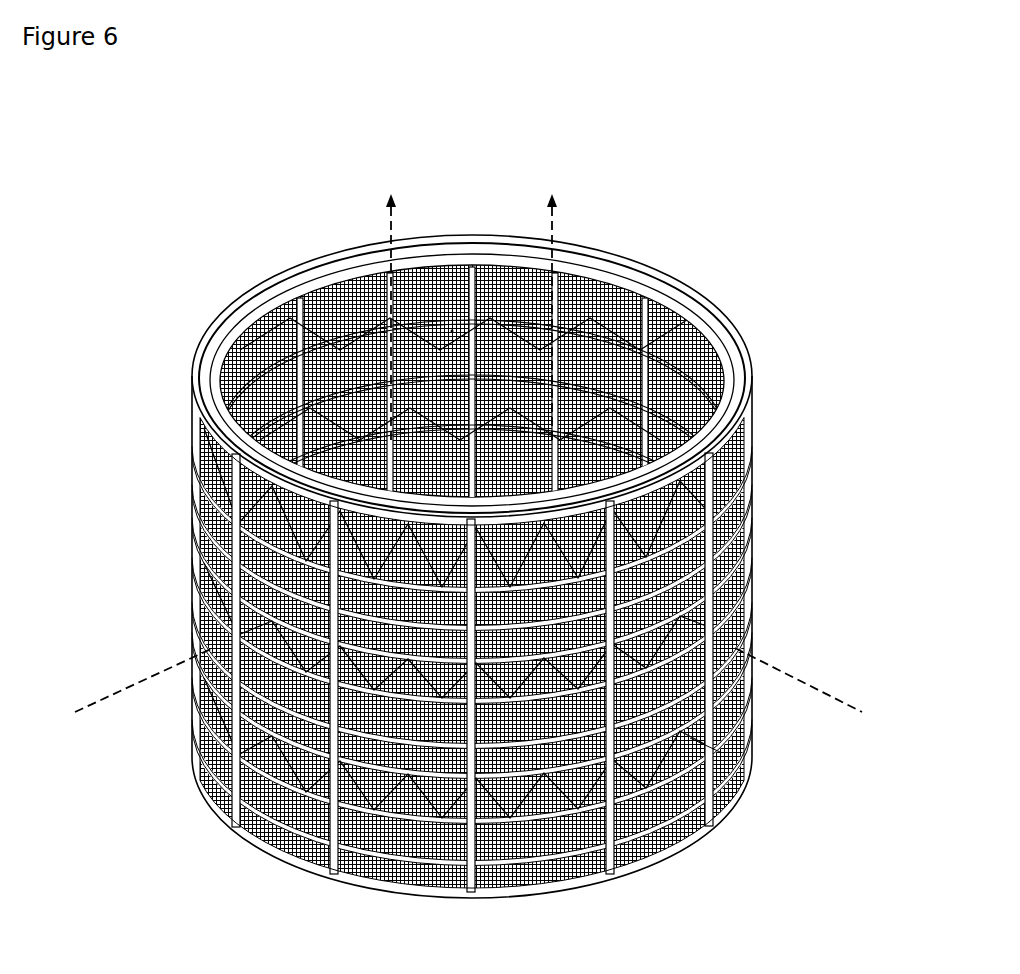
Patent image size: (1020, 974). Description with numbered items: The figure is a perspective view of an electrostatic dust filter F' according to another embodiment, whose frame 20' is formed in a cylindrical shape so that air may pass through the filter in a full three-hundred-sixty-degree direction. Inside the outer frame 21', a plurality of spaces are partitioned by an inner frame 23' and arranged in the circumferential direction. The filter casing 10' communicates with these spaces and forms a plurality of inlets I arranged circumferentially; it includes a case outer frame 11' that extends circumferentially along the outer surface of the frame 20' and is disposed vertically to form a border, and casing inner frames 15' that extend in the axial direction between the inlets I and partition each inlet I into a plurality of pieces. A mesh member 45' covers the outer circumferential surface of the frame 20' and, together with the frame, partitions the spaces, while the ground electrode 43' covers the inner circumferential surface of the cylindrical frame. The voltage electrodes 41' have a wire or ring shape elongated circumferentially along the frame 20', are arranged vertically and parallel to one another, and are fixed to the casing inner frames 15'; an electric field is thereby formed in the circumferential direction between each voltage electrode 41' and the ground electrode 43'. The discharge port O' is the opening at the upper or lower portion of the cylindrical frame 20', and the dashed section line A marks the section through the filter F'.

The electrostatic dust filter F' is at (477, 524).
The discharge port O' is at (472, 330).
The ground electrode 43' is at (472, 337).
The frame 20' is at (506, 342).
The outer frame 21' is at (506, 376).
The case outer frame 11' is at (522, 637).
The filter casing 10' is at (549, 664).
The casing inner frame 15' is at (523, 650).
The mesh member 45' is at (556, 672).
The inlet I is at (705, 745).
The voltage electrode 41' is at (482, 672).
The inner frame 23' is at (459, 690).
The section line A- A is at (467, 448).